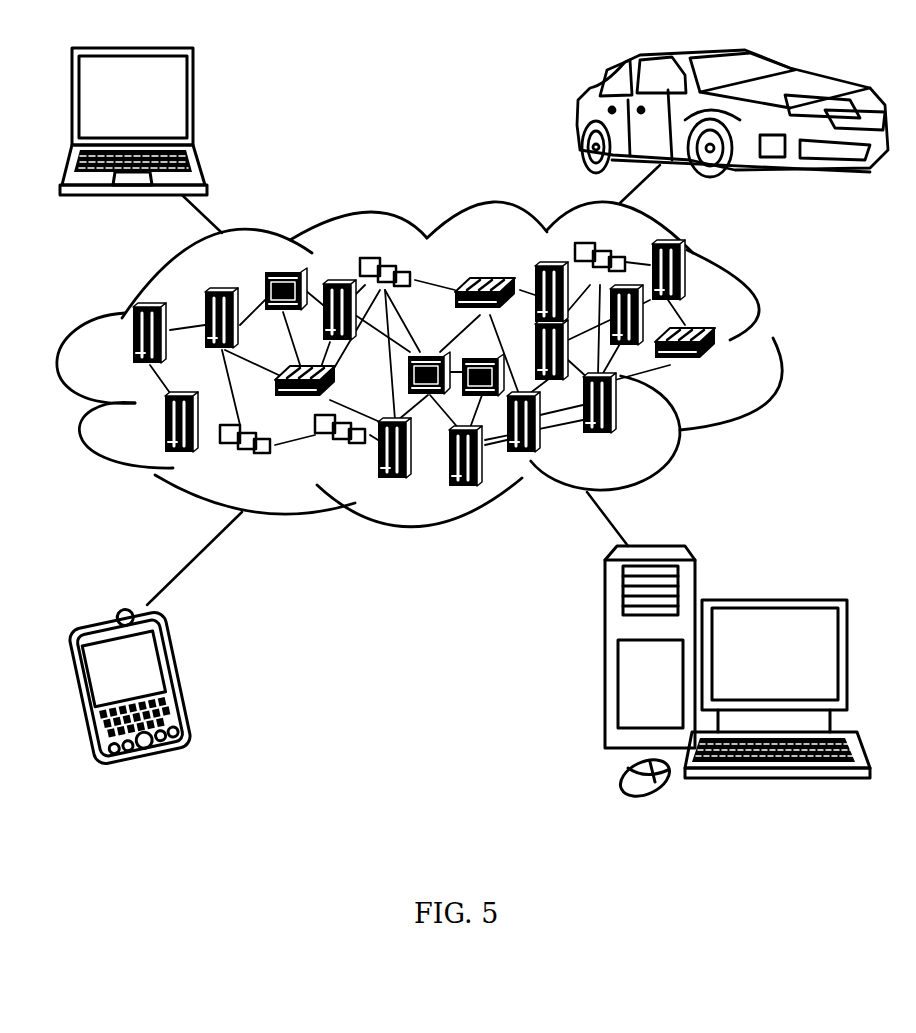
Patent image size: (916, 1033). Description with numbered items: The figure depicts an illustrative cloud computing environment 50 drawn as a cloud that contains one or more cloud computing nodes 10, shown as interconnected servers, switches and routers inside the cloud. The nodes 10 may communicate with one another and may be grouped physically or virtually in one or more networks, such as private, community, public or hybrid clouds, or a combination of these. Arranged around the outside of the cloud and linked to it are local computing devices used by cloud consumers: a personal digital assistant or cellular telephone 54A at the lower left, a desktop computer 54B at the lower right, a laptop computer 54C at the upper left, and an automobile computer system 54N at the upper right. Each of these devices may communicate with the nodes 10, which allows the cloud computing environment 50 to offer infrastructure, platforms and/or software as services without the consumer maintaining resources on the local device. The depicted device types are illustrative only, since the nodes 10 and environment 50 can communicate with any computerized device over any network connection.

The cloud computing nodes 10 is at (722, 372).
The cloud computing environment 50 is at (773, 338).
The personal digital assistant (PDA) or cellular telephone 54A is at (185, 682).
The desktop computer 54B is at (773, 600).
The laptop computer 54C is at (193, 103).
The automobile computer system 54N is at (580, 118).